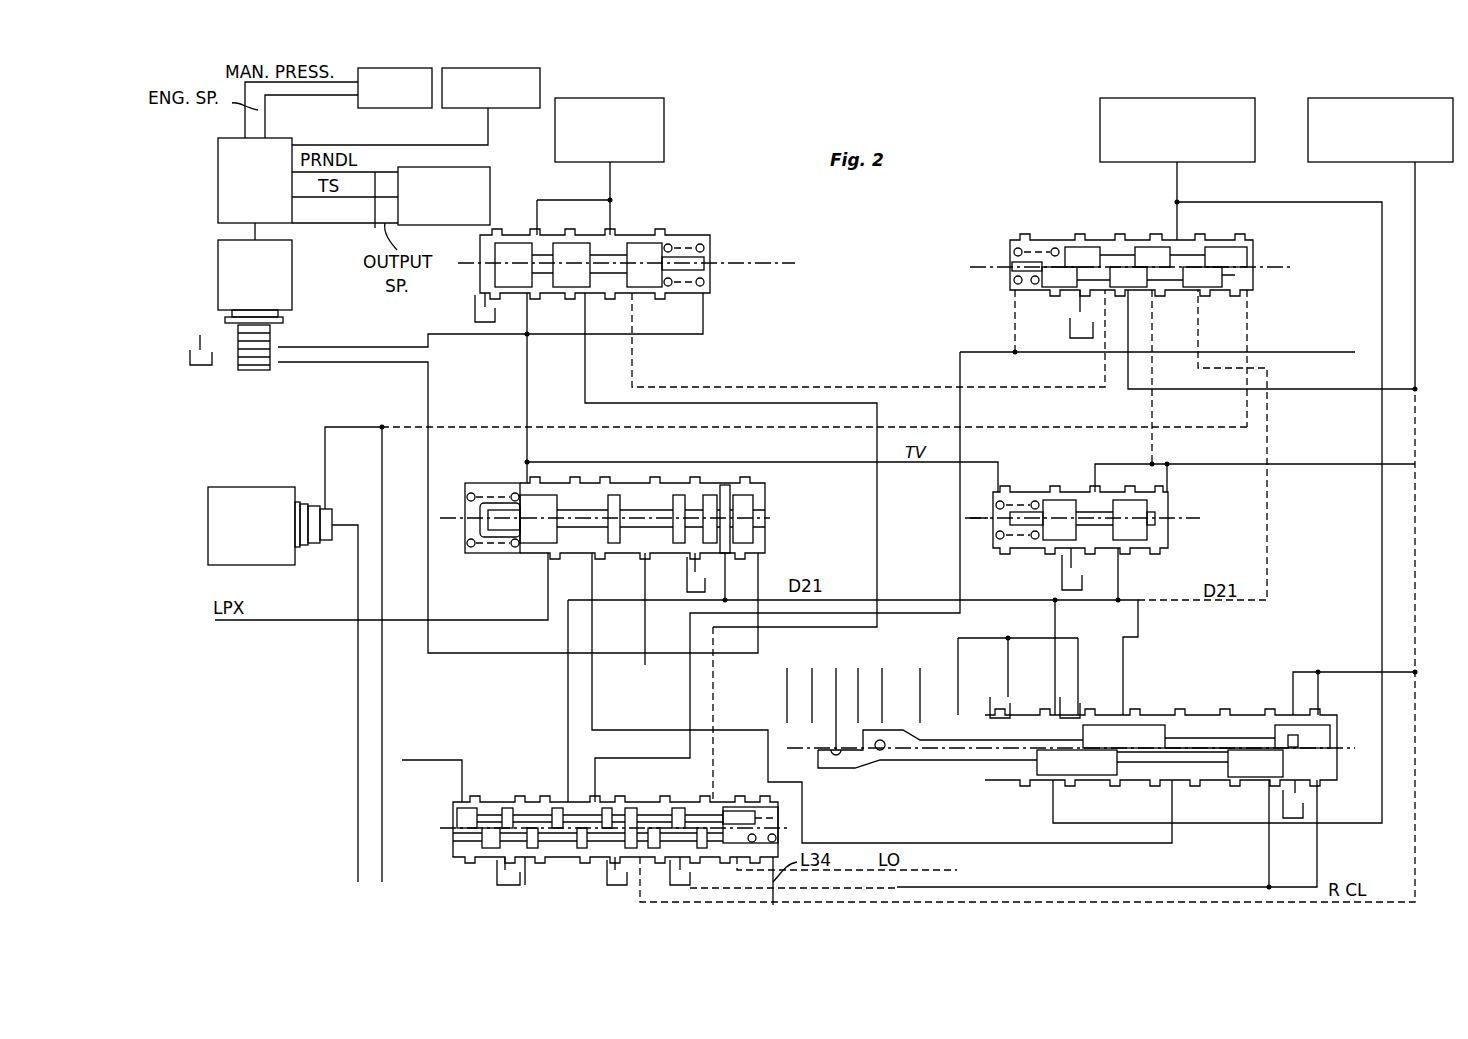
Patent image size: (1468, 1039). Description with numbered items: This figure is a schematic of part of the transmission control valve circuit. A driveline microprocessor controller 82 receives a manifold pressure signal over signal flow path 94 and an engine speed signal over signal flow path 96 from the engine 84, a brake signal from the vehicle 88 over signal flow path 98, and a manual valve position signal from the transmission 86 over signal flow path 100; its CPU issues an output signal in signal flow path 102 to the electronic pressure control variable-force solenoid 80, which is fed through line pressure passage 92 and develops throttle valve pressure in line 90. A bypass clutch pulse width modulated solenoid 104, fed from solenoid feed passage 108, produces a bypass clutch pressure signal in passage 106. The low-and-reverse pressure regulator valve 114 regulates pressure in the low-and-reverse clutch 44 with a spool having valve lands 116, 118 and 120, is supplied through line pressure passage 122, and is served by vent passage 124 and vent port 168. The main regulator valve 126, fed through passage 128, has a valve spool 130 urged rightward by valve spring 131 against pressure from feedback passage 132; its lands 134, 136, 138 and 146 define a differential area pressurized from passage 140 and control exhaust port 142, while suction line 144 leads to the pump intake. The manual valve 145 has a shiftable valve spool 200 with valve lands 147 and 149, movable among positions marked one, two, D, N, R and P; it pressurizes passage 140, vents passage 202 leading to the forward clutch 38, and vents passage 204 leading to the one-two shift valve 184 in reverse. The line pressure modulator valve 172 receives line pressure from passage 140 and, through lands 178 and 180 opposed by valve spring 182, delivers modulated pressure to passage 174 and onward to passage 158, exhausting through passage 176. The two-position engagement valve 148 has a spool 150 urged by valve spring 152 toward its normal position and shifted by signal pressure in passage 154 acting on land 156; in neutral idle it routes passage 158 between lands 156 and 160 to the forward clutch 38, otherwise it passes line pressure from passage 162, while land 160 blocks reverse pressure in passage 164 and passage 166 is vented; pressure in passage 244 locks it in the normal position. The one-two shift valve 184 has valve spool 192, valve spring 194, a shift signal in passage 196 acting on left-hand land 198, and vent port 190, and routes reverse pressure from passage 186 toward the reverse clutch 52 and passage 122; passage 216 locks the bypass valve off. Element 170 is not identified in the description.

The forward clutch 38 is at (1100, 140).
The low-and-reverse clutch 44 is at (664, 132).
The reverse clutch 52 is at (1308, 140).
The electronic pressure control variable-force solenoid 80 is at (218, 262).
The driveline microprocessor controller 82 is at (218, 160).
The engine 84 is at (378, 108).
The transmission 86 is at (490, 196).
The vehicle 88 is at (476, 108).
The line 90 is at (338, 347).
The line pressure passage 92 is at (342, 366).
The signal flow path 94 is at (244, 125).
The signal flow path 96 is at (268, 138).
The signal flow path 98 is at (375, 145).
The signal flow path 100 is at (375, 222).
The signal flow path 102 is at (255, 232).
The bypass clutch pulse width modulated solenoid 104 is at (208, 497).
The passage 106 is at (382, 496).
The solenoid feed passage 108 is at (358, 692).
The low-and-reverse pressure regulator valve 114 is at (631, 266).
The valve land 116 is at (645, 293).
The valve land 118 is at (568, 295).
The valve land 120 is at (512, 293).
The line pressure passage 122 is at (698, 235).
The low-and-reverse clutch vent passage 124 is at (731, 387).
The main regulator valve 126 is at (649, 523).
The passage 128 is at (593, 608).
The valve spool 130 is at (578, 522).
The valve spring 131 is at (495, 548).
The feedback passage 132 is at (760, 577).
The valve land 134 is at (728, 487).
The valve land 136 is at (750, 505).
The valve land 138 is at (680, 495).
The passage 140 is at (877, 535).
The exhaust port 142 is at (688, 568).
The suction line 144 is at (645, 665).
The manual valve 145 is at (1201, 738).
The valve land 146 is at (613, 493).
The valve land 147 is at (1130, 725).
The two-position engagement valve 148 is at (1148, 278).
The valve land 149 is at (1250, 777).
The valve spool 150 is at (1117, 252).
The valve spring 152 is at (1037, 252).
The signal pressure passage 154 is at (1208, 428).
The valve land 156 is at (1200, 288).
The modulated line pressure passage 158 is at (1148, 403).
The valve land 160 is at (1118, 290).
The line pressure passage 162 is at (975, 566).
The reverse clutch pressure passage 164 is at (1273, 341).
The passage 166 is at (1040, 388).
The vent port 168 is at (1075, 312).
The valve spring 170 is at (1048, 282).
The line pressure modulator valve 172 is at (1095, 518).
The modulated line pressure passage 174 is at (1283, 466).
The exhaust passage 176 is at (1062, 568).
The valve land 178 is at (1130, 508).
The valve land 180 is at (1060, 505).
The valve spring 182 is at (993, 518).
The 1-2 shift valve 184 is at (589, 816).
The reverse clutch pressure passage 186 is at (1066, 887).
The vent port 190 is at (614, 862).
The valve spool 192 is at (645, 822).
The valve spring 194 is at (755, 820).
The shift signal passage 196 is at (445, 760).
The left-hand land 198 is at (462, 815).
The shiftable valve spool 200 is at (1178, 745).
The passage 202 is at (1382, 615).
The passage 204 is at (957, 797).
The passage 216 is at (520, 875).
The passage 244 is at (960, 587).